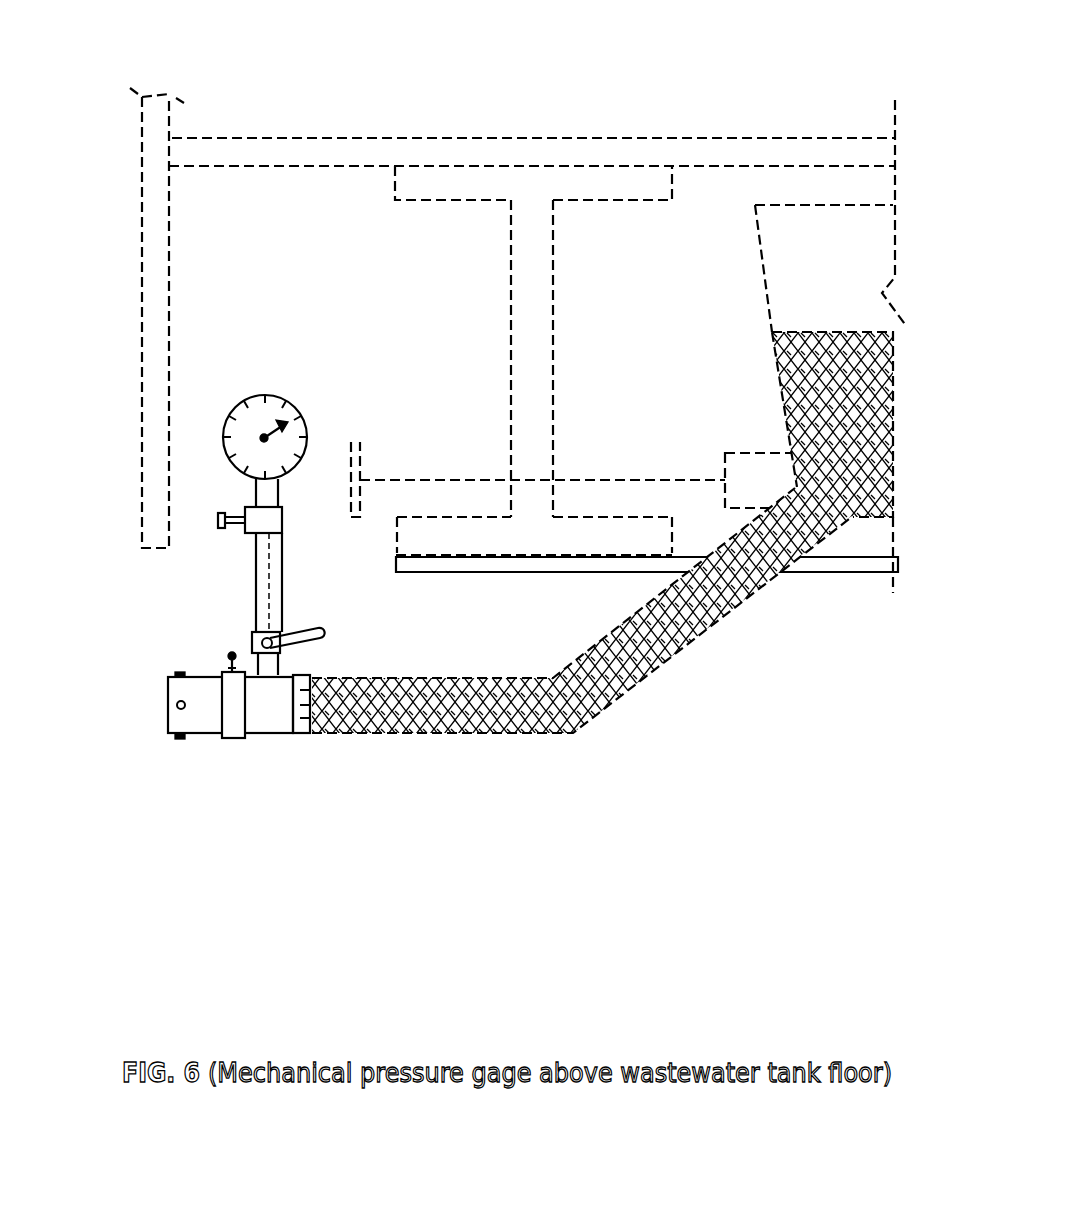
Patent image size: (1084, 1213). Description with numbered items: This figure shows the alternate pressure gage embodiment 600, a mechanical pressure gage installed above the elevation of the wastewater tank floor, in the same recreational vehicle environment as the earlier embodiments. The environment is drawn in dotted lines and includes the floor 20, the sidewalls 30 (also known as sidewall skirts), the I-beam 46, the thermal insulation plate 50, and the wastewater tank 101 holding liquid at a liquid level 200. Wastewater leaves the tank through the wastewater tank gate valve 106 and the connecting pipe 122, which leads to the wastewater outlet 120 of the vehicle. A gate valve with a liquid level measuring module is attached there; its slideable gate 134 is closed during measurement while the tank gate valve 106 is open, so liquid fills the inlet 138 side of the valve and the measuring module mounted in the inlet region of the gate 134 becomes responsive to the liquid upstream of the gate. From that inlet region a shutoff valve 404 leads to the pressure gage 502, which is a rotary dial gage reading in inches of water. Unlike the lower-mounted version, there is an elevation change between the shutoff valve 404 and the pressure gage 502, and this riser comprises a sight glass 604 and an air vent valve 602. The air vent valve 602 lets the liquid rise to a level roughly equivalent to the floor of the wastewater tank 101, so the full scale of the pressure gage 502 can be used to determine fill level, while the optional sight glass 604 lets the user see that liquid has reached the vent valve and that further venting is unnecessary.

The floor 20 is at (217, 150).
The sidewalls 30 is at (155, 192).
The I-beam 46 is at (455, 178).
The thermal insulation plate 50 is at (822, 565).
The wastewater tank 101 is at (773, 215).
The wastewater tank gate valve 106 is at (725, 453).
The wastewater outlet 120 is at (168, 720).
The connecting pipe 122 is at (712, 622).
The slideable gate 134 is at (228, 662).
The inlet 138 is at (323, 735).
The liquid level 200 is at (860, 330).
The shutoff valve 404 is at (252, 640).
The pressure gage 502 is at (222, 428).
The alternate pressure gage embodiment 600 is at (228, 606).
The air vent valve 602 is at (220, 528).
The sight glass 604 is at (253, 605).